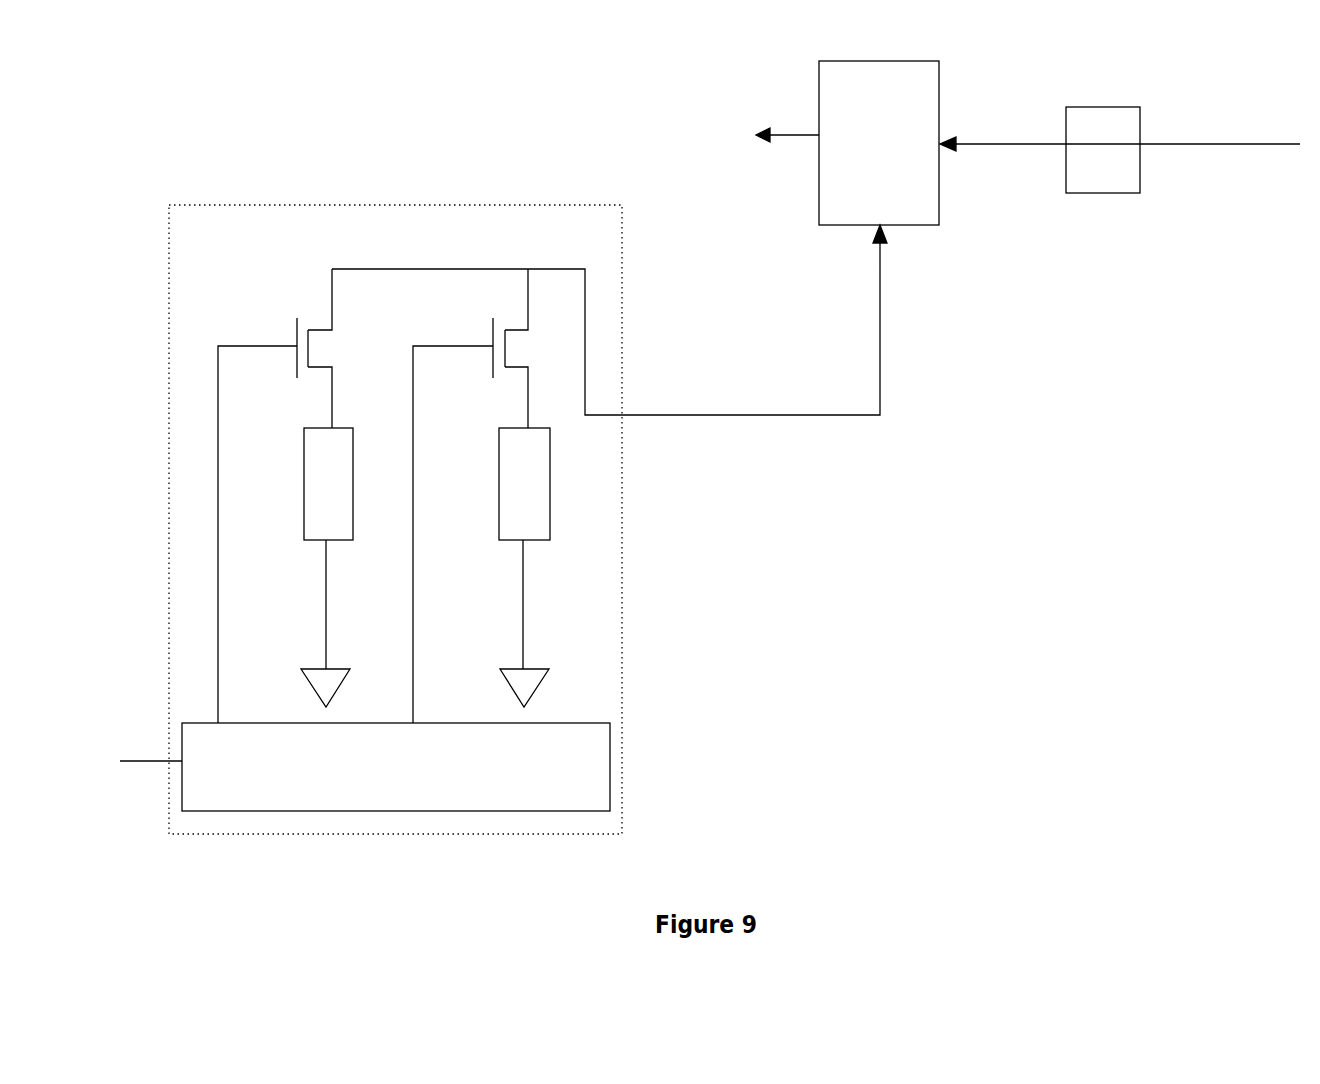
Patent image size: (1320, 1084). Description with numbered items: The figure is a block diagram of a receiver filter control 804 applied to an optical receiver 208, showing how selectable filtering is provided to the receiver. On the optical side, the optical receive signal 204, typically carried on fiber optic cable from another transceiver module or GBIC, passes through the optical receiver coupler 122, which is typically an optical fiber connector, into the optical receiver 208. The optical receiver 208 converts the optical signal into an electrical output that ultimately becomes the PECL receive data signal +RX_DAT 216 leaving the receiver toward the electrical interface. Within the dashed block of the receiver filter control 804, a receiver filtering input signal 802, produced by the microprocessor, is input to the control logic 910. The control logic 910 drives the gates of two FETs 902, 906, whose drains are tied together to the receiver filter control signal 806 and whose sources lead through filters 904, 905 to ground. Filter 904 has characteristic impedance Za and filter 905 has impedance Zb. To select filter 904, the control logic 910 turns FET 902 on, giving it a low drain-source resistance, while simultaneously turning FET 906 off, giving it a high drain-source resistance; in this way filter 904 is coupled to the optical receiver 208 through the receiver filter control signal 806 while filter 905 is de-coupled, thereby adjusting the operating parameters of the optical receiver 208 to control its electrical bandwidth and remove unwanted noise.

The optical receiver coupler 122 is at (1103, 164).
The optical receive signal 204 is at (1120, 135).
The optical receiver 208 is at (879, 143).
The +RX_DAT signal 216 is at (787, 124).
The receiver filtering input signal 802 is at (146, 745).
The receiver filter control 804 is at (395, 541).
The receiver filter control signal 806 is at (609, 320).
The FET 902 is at (275, 496).
The filter 904 is at (292, 567).
The filter 905 is at (489, 567).
The FET 906 is at (470, 496).
The control logic 910 is at (396, 767).